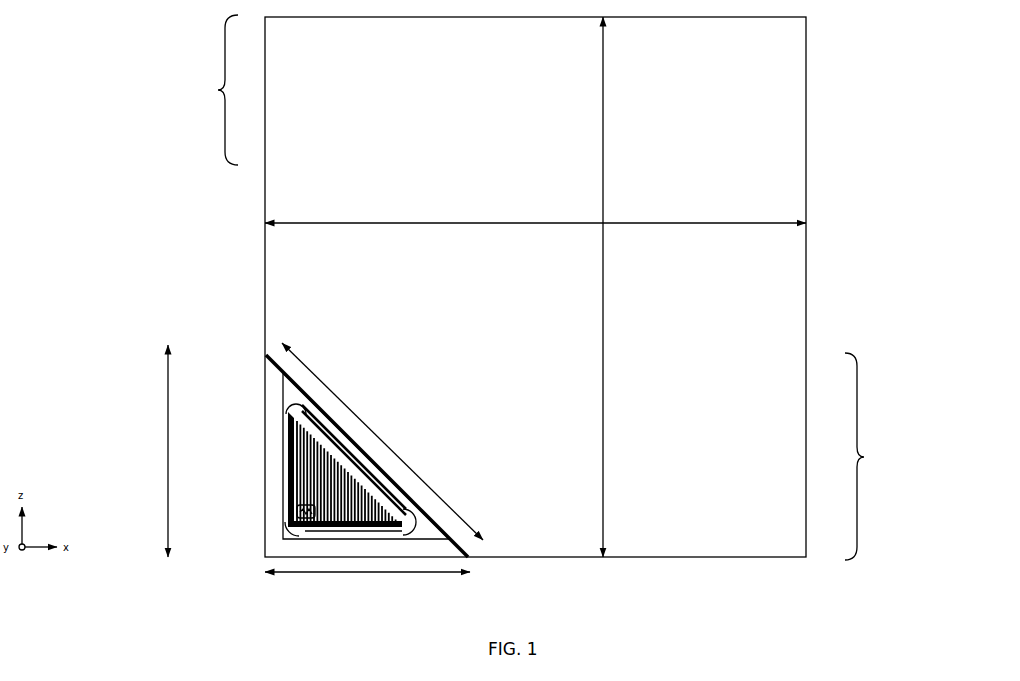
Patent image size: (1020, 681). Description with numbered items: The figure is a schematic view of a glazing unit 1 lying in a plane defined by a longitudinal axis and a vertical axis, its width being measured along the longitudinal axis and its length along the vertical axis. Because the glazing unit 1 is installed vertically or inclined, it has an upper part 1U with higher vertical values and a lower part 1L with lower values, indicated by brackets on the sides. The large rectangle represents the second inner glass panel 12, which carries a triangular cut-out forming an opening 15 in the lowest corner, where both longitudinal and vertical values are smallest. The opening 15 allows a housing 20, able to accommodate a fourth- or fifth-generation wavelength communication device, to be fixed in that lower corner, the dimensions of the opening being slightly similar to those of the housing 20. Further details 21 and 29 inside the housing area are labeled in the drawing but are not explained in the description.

The glazing unit 1 is at (870, 42).
The second inner glass panel 12 is at (778, 184).
The opening 15 is at (266, 355).
The housing 20 is at (250, 457).
The outline of component 21 is at (277, 489).
The hatched electrode region 29 is at (292, 507).
The upper portion 1U is at (218, 90).
The lower portion 1L is at (864, 457).